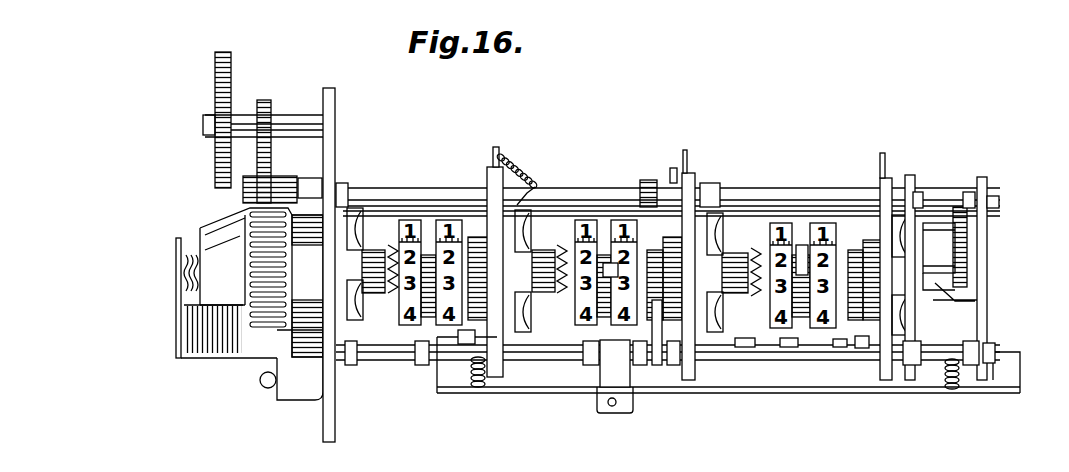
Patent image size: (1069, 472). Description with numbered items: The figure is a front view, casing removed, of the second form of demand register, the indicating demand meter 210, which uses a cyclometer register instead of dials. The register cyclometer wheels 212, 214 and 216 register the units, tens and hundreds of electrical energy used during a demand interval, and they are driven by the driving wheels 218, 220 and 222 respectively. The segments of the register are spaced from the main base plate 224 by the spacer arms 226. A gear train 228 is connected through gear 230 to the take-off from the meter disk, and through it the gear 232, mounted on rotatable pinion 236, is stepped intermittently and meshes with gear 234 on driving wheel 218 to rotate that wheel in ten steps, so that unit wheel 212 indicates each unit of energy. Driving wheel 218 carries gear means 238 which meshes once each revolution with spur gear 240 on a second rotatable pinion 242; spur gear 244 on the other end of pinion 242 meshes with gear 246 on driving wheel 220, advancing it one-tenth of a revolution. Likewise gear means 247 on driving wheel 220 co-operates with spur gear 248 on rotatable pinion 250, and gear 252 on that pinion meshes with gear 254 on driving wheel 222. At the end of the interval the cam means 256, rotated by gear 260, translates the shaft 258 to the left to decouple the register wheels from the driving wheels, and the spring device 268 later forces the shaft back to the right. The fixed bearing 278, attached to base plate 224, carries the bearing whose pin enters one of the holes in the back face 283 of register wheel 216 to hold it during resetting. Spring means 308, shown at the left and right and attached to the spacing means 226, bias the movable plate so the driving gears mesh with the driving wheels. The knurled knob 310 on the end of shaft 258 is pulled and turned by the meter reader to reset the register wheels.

The indicating demand meter 210 is at (739, 171).
The register cyclometer wheel 212 is at (778, 229).
The register cyclometer wheel 214 is at (588, 230).
The register cyclometer wheel 216 is at (411, 228).
The driving wheel 218 is at (819, 231).
The driving wheel 220 is at (625, 213).
The driving wheel 222 is at (448, 226).
The main base plate 224 is at (333, 130).
The spacer arms 226 is at (372, 190).
The gear train 228 is at (344, 67).
The gear 230 is at (230, 64).
The gear 232 is at (862, 345).
The gear 234 is at (878, 240).
The rotatable pinion 236 is at (839, 348).
The gear means 238 is at (805, 243).
The spur gear 240 is at (790, 348).
The rotatable pinion 242 is at (735, 347).
The spur gear 244 is at (663, 340).
The gear 246 is at (665, 236).
The gear means 247 is at (614, 265).
The spur gear 248 is at (608, 356).
The rotatable pinion 250 is at (568, 343).
The gear 252 is at (484, 330).
The gear 254 is at (520, 207).
The cam means 256 is at (948, 241).
The shaft 258 is at (960, 296).
The gear 260 is at (972, 226).
The spring device 268 is at (192, 252).
The fixed bearing 278 is at (362, 322).
The back face 283 is at (392, 308).
The spring means 308 is at (478, 356).
The knurled knob 310 is at (244, 320).